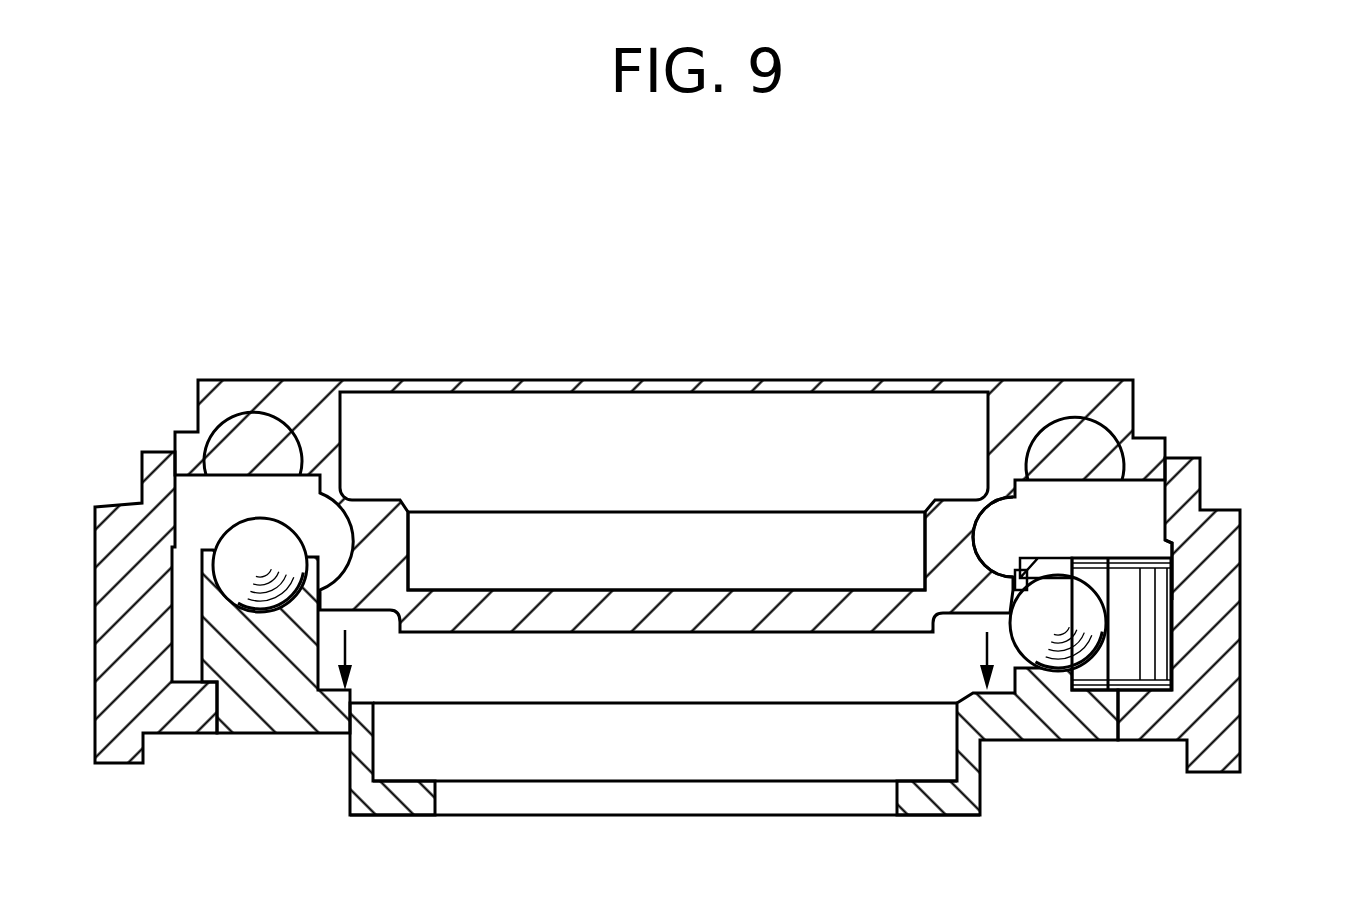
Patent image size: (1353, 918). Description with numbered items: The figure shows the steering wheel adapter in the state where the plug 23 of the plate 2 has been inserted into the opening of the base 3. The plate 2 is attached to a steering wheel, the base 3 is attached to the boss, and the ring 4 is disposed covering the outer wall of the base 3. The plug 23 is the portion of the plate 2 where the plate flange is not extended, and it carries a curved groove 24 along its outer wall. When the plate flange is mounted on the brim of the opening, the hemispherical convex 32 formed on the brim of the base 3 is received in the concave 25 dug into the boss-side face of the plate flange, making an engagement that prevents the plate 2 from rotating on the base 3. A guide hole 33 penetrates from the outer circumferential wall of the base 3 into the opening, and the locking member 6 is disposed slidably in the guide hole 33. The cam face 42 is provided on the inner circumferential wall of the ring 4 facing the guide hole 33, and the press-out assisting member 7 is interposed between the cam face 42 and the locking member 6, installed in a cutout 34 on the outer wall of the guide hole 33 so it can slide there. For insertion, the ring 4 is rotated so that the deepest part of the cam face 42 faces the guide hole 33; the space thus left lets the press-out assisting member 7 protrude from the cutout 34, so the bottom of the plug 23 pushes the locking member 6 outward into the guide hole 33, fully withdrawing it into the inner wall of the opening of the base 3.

The plate 2 is at (1100, 383).
The base 3 is at (943, 800).
The ring 4 is at (1232, 623).
The locking member 6 is at (1057, 635).
The press-out assisting member 7 is at (1135, 672).
The plug 23 is at (675, 590).
The curved groove 24 is at (973, 513).
The concave 25 is at (260, 447).
The convex 32 is at (256, 595).
The guide hole 33 is at (1020, 547).
The cutout 34 is at (1080, 527).
The cam face 42 is at (1178, 575).